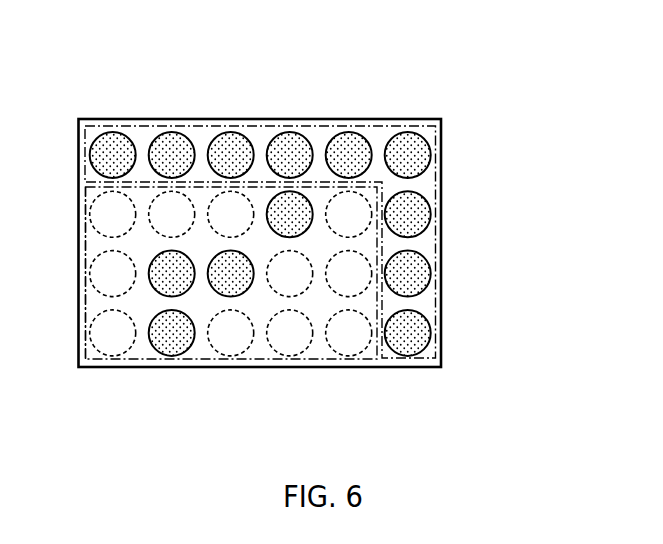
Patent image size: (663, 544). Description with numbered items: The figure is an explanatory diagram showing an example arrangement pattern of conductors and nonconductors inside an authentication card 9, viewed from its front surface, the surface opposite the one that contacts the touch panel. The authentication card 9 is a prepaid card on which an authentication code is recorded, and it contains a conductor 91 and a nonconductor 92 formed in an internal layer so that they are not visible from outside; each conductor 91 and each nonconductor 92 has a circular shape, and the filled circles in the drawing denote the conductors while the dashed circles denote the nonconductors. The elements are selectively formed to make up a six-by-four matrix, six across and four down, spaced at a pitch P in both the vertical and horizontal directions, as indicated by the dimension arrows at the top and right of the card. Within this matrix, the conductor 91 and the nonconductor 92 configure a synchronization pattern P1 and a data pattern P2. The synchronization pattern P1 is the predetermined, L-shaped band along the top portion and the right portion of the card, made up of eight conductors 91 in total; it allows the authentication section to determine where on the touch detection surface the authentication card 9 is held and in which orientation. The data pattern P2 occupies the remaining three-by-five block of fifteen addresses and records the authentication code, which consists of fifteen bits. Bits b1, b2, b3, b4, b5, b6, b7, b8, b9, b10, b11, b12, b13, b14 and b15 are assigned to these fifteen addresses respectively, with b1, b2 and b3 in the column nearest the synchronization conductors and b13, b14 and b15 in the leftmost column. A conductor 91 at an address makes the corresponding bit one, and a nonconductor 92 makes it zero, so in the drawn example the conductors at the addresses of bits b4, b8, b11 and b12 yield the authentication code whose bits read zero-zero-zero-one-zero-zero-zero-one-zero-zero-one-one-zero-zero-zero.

The authentication card 9 is at (430, 118).
The conductor 91 is at (412, 343).
The nonconductor 92 is at (117, 371).
The pitch P is at (408, 143).
The synchronization pattern P1 is at (260, 126).
The data pattern P2 is at (262, 360).
The bit b1 is at (349, 214).
The bit b2 is at (349, 274).
The bit b3 is at (349, 333).
The bit b4 is at (290, 214).
The bit b5 is at (290, 274).
The bit b6 is at (290, 333).
The bit b7 is at (231, 214).
The bit b8 is at (231, 274).
The bit b9 is at (231, 333).
The bit b10 is at (172, 214).
The bit b11 is at (172, 274).
The bit b12 is at (172, 333).
The bit b13 is at (113, 214).
The bit b14 is at (113, 274).
The bit b15 is at (113, 333).